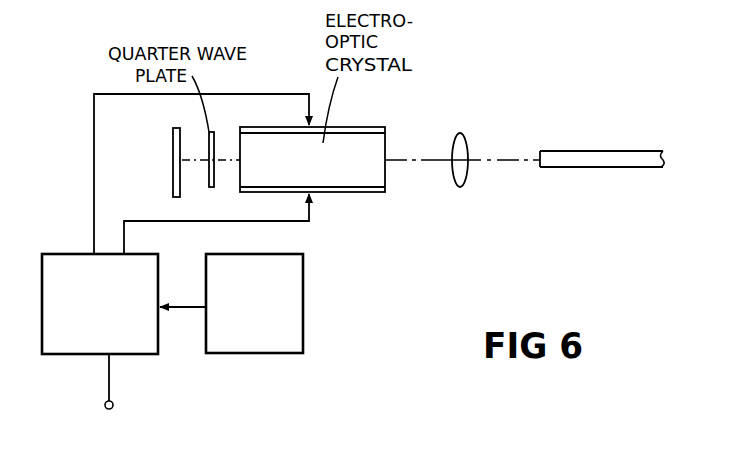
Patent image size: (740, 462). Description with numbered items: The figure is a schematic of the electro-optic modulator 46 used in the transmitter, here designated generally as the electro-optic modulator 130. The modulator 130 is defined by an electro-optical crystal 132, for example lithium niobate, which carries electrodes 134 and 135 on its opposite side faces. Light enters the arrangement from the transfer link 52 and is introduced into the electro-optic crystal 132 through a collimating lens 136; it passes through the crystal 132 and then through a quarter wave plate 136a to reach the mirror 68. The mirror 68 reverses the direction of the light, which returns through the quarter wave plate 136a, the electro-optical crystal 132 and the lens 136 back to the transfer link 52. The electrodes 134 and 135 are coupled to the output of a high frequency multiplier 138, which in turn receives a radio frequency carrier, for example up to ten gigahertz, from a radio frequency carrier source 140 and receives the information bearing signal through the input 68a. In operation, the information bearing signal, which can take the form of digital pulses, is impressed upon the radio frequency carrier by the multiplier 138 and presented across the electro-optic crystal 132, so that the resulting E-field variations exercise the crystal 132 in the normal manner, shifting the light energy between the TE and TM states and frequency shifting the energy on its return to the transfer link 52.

The electro-optic modulator 46 is at (372, 116).
The transfer link 52 is at (580, 150).
The mirror 68 is at (173, 150).
The input 68a is at (112, 408).
The electro-optic modulator 130 is at (422, 194).
The electro-optical crystal 132 is at (328, 168).
The electrode 134 is at (355, 193).
The electrode 135 is at (273, 126).
The collimating lens 136 is at (459, 133).
The quarter wave plate 136a is at (214, 177).
The high frequency multiplier 138 is at (147, 355).
The radio frequency carrier source 140 is at (297, 354).